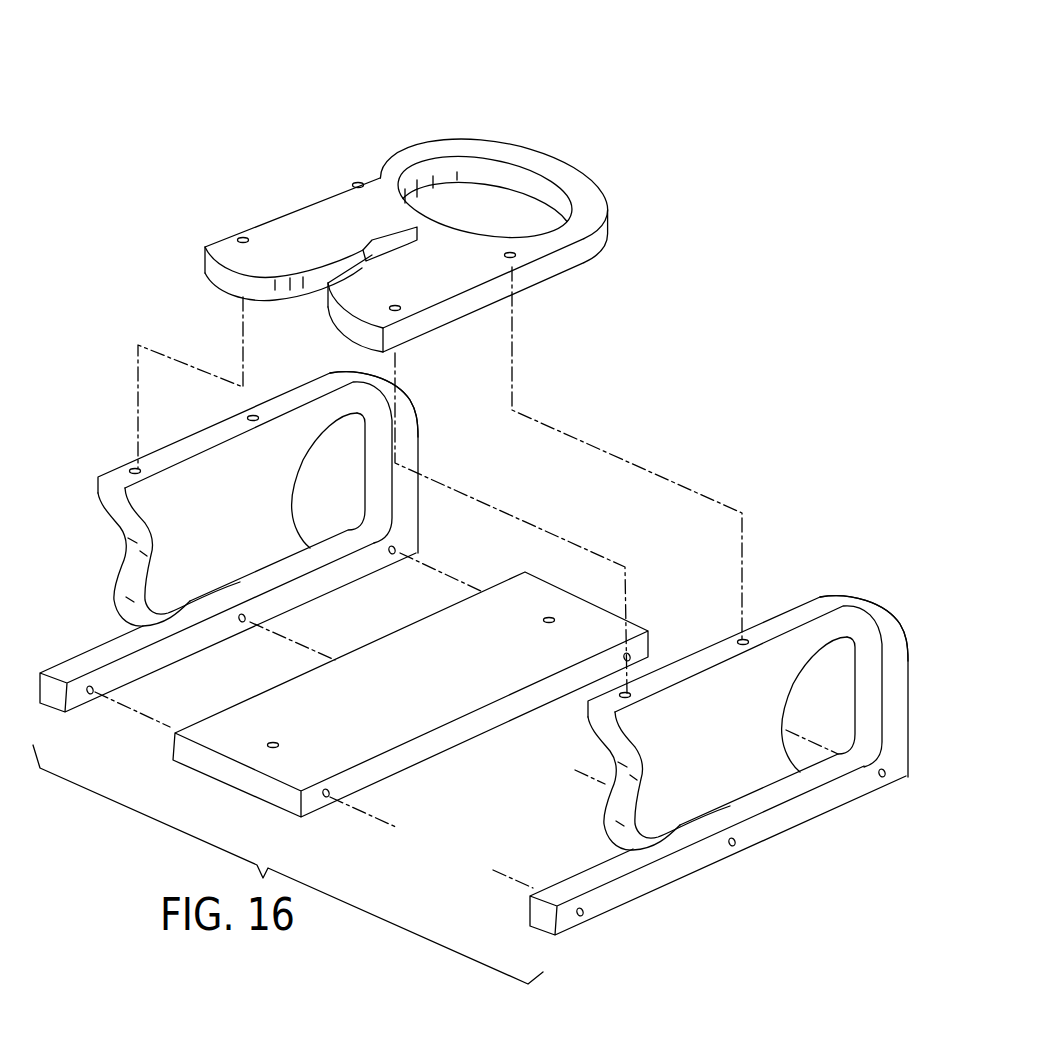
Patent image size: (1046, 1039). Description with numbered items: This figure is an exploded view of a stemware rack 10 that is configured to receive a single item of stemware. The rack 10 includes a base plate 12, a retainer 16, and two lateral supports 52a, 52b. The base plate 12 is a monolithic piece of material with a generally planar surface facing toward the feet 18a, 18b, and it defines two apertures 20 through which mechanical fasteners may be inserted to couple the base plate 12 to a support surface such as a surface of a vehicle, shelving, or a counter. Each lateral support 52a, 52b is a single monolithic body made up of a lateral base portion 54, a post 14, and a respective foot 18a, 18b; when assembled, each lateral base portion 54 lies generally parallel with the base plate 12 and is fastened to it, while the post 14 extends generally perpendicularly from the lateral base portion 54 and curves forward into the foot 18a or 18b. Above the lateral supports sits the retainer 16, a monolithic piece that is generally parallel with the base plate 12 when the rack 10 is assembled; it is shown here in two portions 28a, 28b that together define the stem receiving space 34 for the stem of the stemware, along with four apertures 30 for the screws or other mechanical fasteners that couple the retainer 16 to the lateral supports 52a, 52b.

The stemware rack 10 is at (238, 120).
The base plate 12 is at (438, 686).
The post 14 is at (401, 417).
The retainer 16 is at (603, 167).
The foot 18a is at (227, 526).
The foot 18b is at (731, 754).
The apertures 20 is at (549, 624).
The first clamp plate 28a is at (321, 254).
The second clamp plate 28b is at (440, 287).
The apertures 30 is at (357, 184).
The stem receiving space 34 is at (380, 229).
The lateral support 52a is at (100, 655).
The lateral support 52b is at (822, 807).
The lateral base portion 54 is at (133, 640).